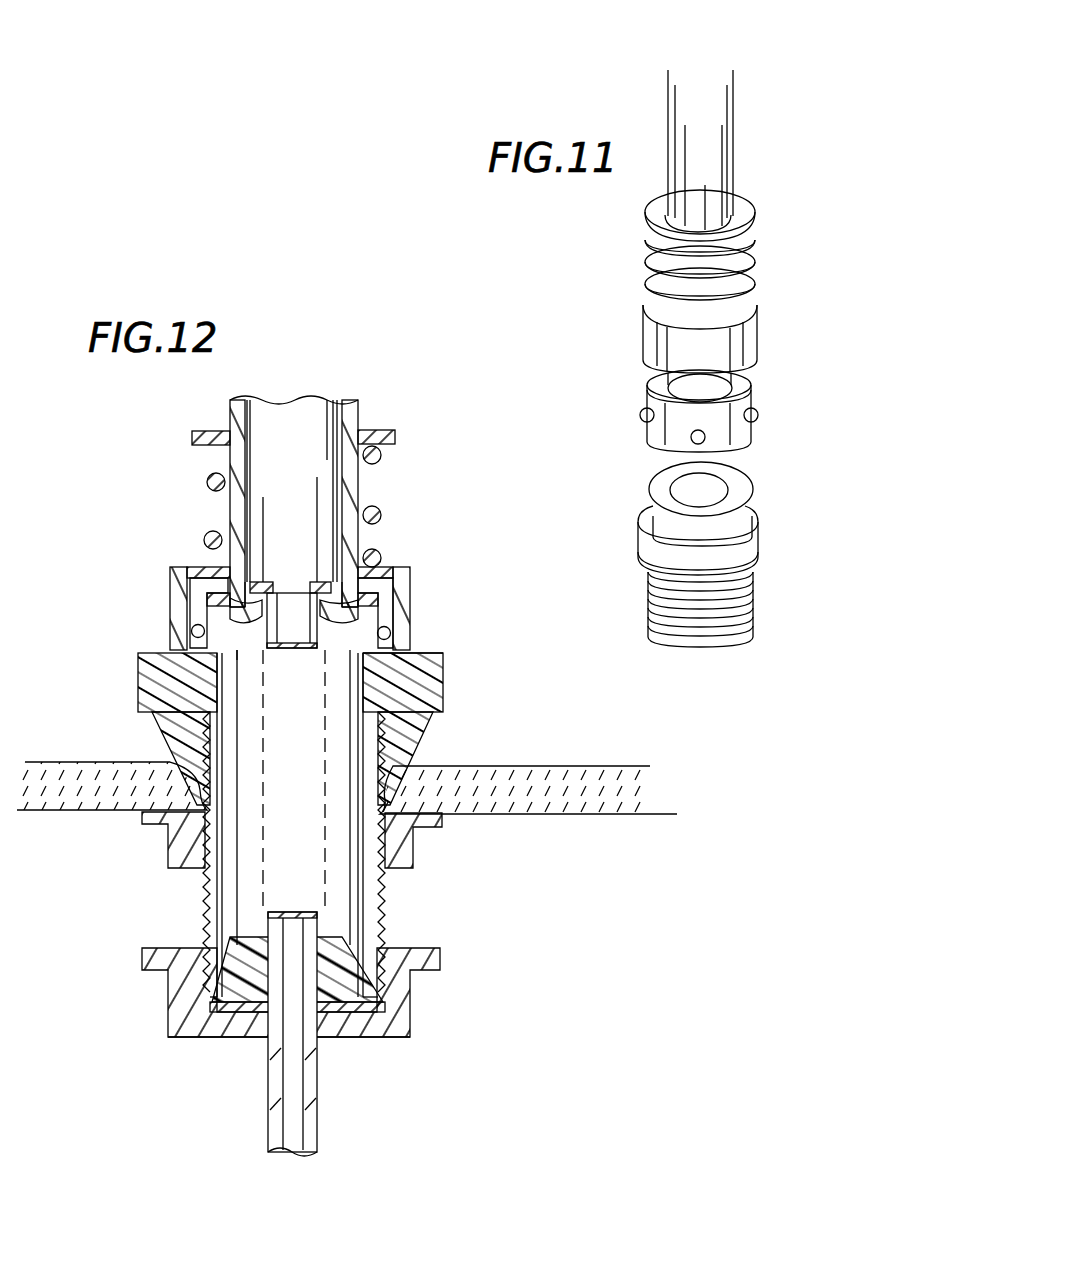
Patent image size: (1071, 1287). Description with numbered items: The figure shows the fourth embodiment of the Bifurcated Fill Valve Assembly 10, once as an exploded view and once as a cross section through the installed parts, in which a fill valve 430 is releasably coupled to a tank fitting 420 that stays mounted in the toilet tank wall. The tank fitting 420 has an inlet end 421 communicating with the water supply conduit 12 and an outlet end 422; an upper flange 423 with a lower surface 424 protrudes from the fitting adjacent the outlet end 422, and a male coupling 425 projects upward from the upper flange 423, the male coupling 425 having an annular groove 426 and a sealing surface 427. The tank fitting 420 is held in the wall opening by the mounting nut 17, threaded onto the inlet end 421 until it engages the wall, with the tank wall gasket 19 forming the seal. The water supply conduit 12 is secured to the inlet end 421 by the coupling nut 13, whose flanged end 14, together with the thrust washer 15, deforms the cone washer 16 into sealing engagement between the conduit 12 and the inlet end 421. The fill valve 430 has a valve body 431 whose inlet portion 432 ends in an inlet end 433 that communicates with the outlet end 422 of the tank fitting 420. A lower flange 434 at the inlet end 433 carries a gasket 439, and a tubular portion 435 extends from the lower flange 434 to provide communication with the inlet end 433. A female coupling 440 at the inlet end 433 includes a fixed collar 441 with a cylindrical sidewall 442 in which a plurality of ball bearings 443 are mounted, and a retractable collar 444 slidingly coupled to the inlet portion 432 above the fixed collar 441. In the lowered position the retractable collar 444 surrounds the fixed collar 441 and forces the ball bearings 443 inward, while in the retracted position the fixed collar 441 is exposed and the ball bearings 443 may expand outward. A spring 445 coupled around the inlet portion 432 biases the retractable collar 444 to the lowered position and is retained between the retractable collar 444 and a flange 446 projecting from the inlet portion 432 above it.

In FIG. 12, the Bifurcated Fill Valve Assembly 10 is at (545, 690).
In FIG. 12, the water supply conduit 12 is at (312, 1115).
In FIG. 12, the coupling nut 13 is at (405, 1012).
In FIG. 12, the flanged end 14 is at (380, 1012).
In FIG. 12, the thrust washer 15 is at (240, 1012).
In FIG. 12, the cone washer 16 is at (345, 975).
In FIG. 12, the mounting nut 17 is at (400, 845).
In FIG. 12, the tank wall gasket 19 is at (180, 725).
In FIG. 12, the tank fitting 420 is at (490, 742).
In FIG. 11, the tank fitting 420 is at (768, 590).
In FIG. 12, the inlet end 421 is at (205, 975).
In FIG. 12, the outlet end 422 is at (225, 648).
In FIG. 11, the outlet end 422 is at (715, 488).
In FIG. 12, the upper flange 423 is at (405, 690).
In FIG. 11, the upper flange 423 is at (759, 557).
In FIG. 12, the lower surface 424 is at (390, 745).
In FIG. 11, the lower surface 424 is at (700, 609).
In FIG. 12, the male coupling 425 is at (395, 653).
In FIG. 11, the male coupling 425 is at (760, 510).
In FIG. 12, the annular groove 426 is at (340, 652).
In FIG. 11, the annular groove 426 is at (656, 540).
In FIG. 12, the sealing surface 427 is at (293, 592).
In FIG. 11, the sealing surface 427 is at (660, 480).
In FIG. 11, the fill valve 430 is at (640, 78).
In FIG. 12, the valve body 431 is at (355, 398).
In FIG. 11, the valve body 431 is at (738, 94).
In FIG. 12, the inlet portion 432 is at (352, 500).
In FIG. 11, the inlet portion 432 is at (710, 205).
In FIG. 12, the inlet end 433 is at (300, 568).
In FIG. 12, the lower flange 434 is at (250, 588).
In FIG. 12, the tubular portion 435 is at (245, 580).
In FIG. 12, the gasket 439 is at (268, 600).
In FIG. 12, the female coupling 440 is at (165, 600).
In FIG. 11, the female coupling 440 is at (768, 352).
In FIG. 12, the fixed collar 441 is at (388, 592).
In FIG. 11, the fixed collar 441 is at (742, 393).
In FIG. 12, the cylindrical sidewall 442 is at (228, 612).
In FIG. 12, the ball bearings 443 is at (192, 632).
In FIG. 11, the ball bearings 443 is at (758, 412).
In FIG. 12, the retractable collar 444 is at (195, 582).
In FIG. 11, the retractable collar 444 is at (745, 298).
In FIG. 12, the spring 445 is at (376, 518).
In FIG. 11, the spring 445 is at (750, 250).
In FIG. 12, the flange 446 is at (385, 436).
In FIG. 11, the flange 446 is at (645, 216).